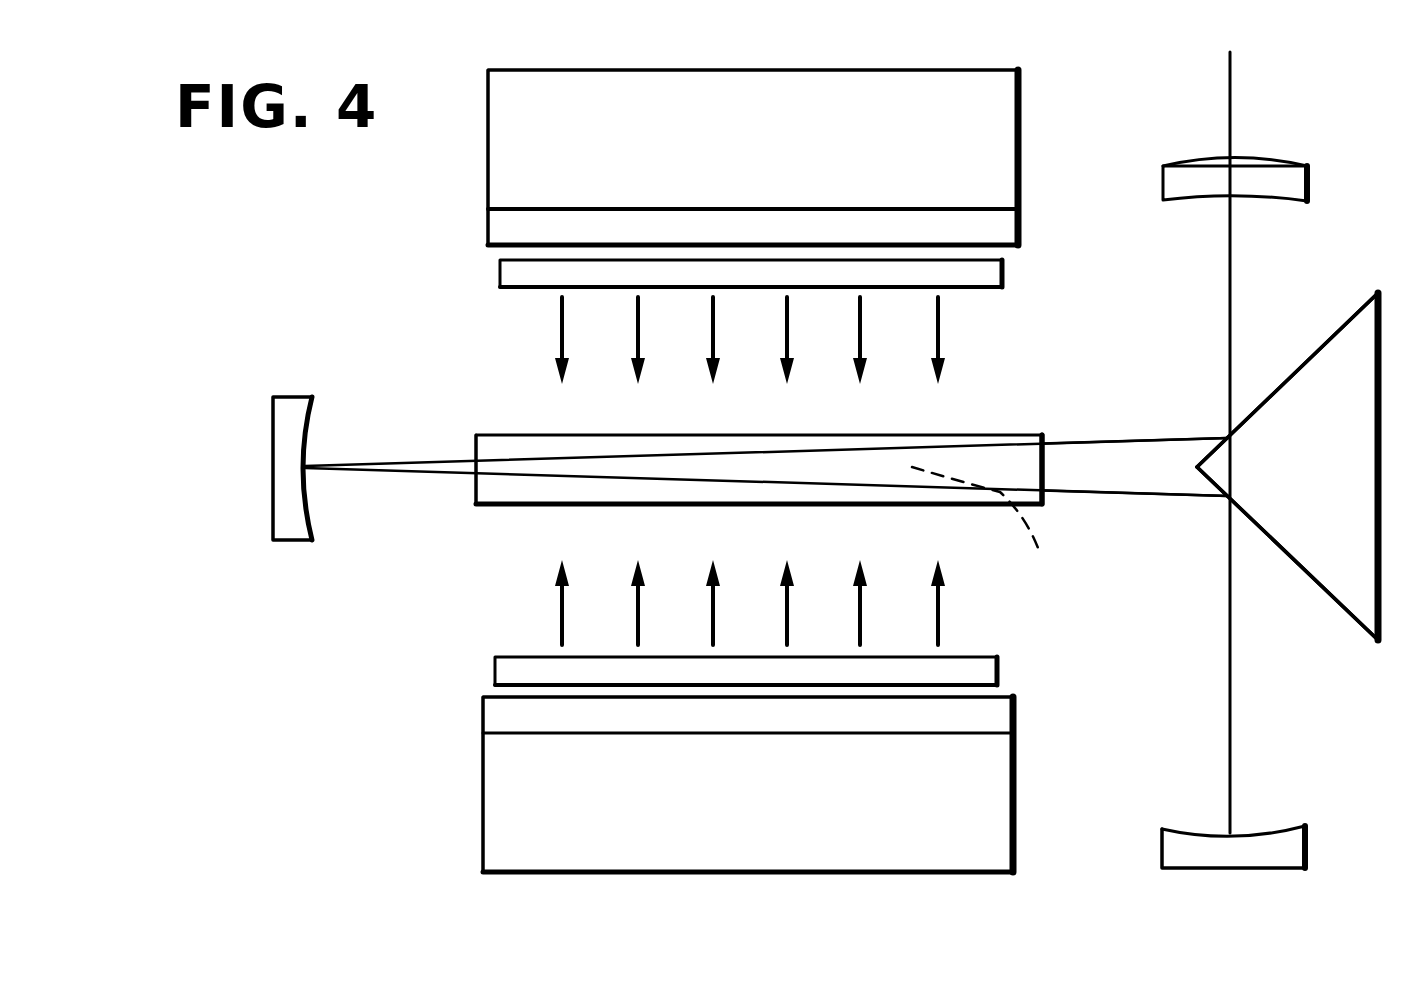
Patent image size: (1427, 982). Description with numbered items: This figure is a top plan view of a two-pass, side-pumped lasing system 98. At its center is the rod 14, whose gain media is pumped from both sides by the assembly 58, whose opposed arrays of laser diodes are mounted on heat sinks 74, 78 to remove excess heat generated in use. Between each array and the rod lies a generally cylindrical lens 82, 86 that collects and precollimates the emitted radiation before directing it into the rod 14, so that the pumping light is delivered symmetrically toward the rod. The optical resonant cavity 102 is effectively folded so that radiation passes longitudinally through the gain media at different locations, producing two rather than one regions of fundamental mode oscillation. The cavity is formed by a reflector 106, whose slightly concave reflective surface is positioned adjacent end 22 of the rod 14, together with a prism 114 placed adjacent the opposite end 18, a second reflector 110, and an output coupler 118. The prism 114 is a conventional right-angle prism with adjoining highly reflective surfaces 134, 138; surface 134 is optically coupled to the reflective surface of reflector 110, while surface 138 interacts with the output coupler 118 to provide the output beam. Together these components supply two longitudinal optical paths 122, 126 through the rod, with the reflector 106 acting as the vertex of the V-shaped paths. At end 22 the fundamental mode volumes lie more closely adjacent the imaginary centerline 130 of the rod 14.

The rod 14 is at (973, 437).
The end of rod 18 is at (1042, 437).
The end of rod 22 is at (476, 487).
The assembly 58 is at (484, 158).
The heat sink 74 is at (766, 173).
The heat sink 78 is at (766, 835).
The lens 82 is at (492, 272).
The lens 86 is at (495, 671).
The lasing system 98 is at (275, 283).
The optical resonant cavity 102 is at (470, 533).
The reflector 106 is at (273, 500).
The reflector 110 is at (1165, 840).
The prism 114 is at (1328, 483).
The output coupler 118 is at (1173, 174).
The longitudinal optical path 122 is at (1158, 498).
The longitudinal optical path 126 is at (1150, 437).
The imaginary centerline 130 is at (1005, 526).
The surface 134 is at (1253, 538).
The surface 138 is at (1265, 385).